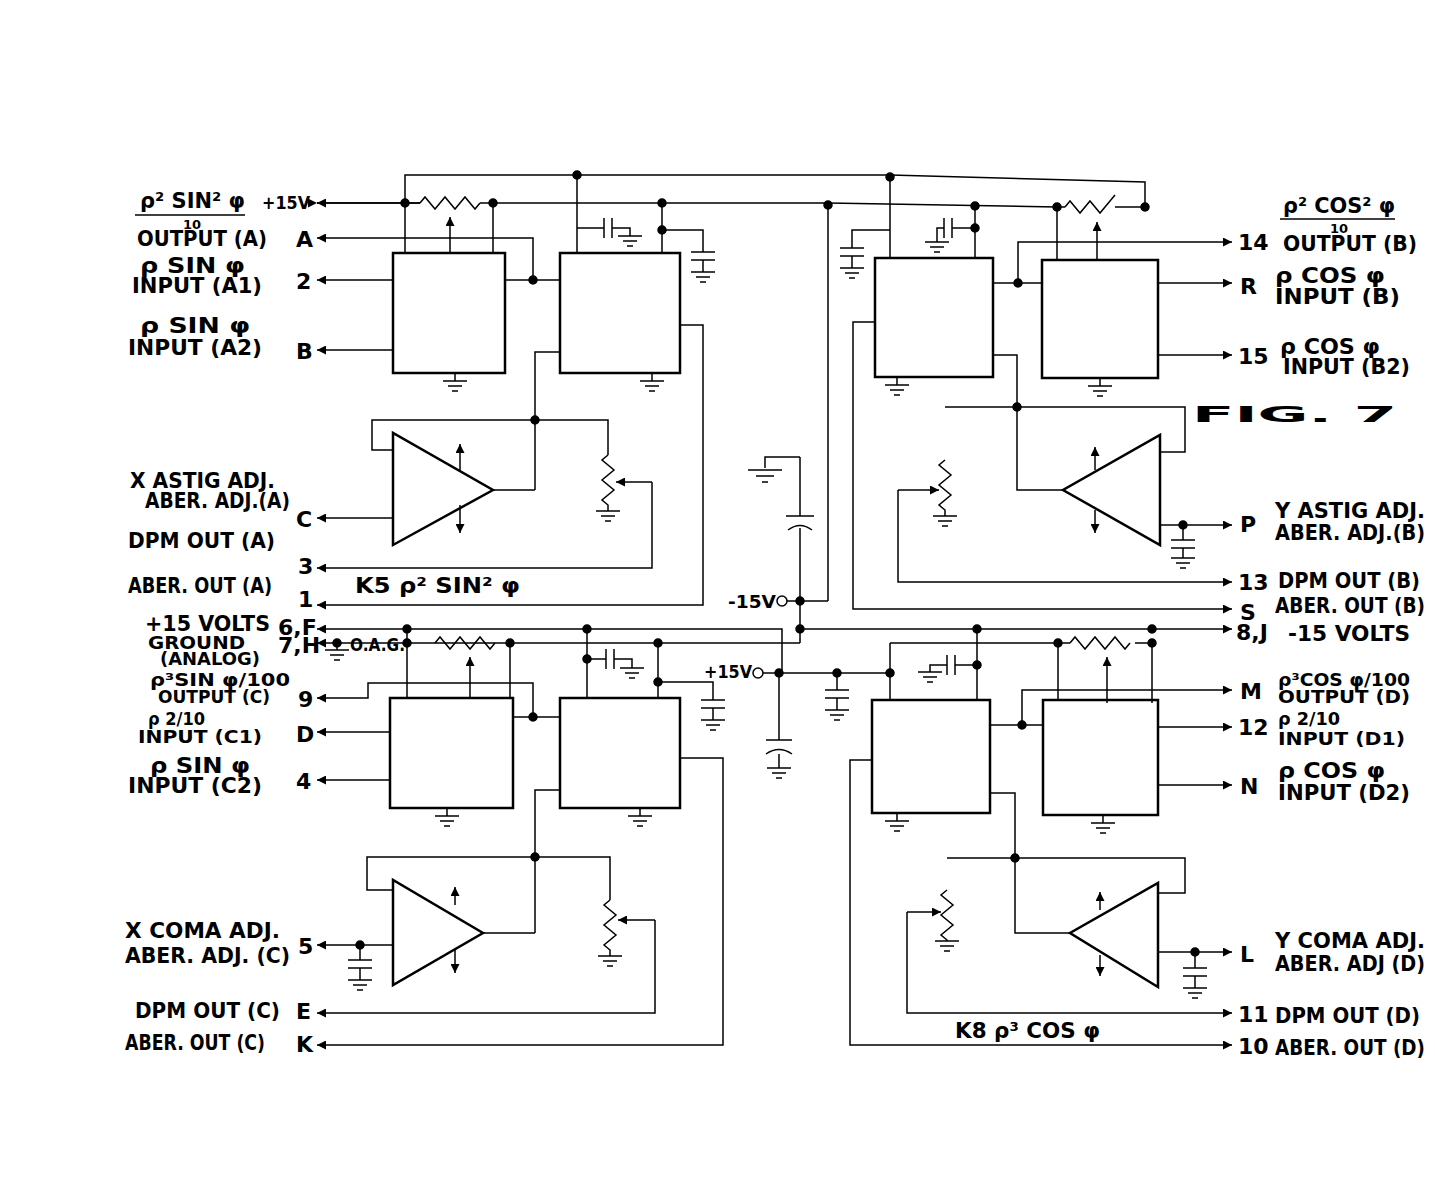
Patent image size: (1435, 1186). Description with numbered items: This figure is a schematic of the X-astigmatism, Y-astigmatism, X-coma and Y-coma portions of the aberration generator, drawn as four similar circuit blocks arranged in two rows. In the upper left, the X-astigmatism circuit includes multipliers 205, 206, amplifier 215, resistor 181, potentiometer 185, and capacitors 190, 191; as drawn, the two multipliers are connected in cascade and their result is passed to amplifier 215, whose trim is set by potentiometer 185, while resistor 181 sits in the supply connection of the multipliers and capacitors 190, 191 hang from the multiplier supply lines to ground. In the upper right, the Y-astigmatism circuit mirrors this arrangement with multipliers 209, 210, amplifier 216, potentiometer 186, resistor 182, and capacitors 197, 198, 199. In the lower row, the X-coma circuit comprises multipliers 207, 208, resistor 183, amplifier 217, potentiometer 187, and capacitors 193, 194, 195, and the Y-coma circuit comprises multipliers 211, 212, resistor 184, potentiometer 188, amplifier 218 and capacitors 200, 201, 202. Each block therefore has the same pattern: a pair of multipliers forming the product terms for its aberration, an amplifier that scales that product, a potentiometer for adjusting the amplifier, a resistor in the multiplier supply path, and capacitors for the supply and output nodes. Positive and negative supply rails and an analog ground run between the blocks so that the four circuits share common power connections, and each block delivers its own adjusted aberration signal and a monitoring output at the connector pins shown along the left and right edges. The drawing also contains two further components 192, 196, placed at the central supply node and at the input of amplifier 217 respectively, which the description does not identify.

The resistor 181 is at (468, 200).
The resistor 182 is at (1122, 207).
The resistor 183 is at (465, 650).
The resistor 184 is at (1130, 650).
The potentiometer 185 is at (616, 472).
The potentiometer 186 is at (950, 492).
The potentiometer 187 is at (625, 913).
The potentiometer 188 is at (955, 925).
The capacitor 190 is at (610, 218).
The capacitor 191 is at (715, 257).
The capacitor 192 is at (793, 520).
The capacitor 193 is at (600, 667).
The capacitor 194 is at (716, 712).
The capacitor 195 is at (792, 757).
The capacitor 196 is at (375, 978).
The capacitor 197 is at (846, 262).
The capacitor 198 is at (948, 222).
The capacitor 199 is at (1210, 520).
The capacitor 200 is at (842, 693).
The capacitor 201 is at (965, 668).
The capacitor 202 is at (1208, 945).
The multiplier 205 is at (438, 376).
The multiplier 206 is at (682, 320).
The multiplier 207 is at (405, 812).
The multiplier 208 is at (650, 812).
The multiplier 209 is at (948, 380).
The multiplier 210 is at (1160, 340).
The multiplier 211 is at (912, 815).
The multiplier 212 is at (1135, 816).
The amplifier 215 is at (480, 505).
The amplifier 216 is at (1075, 500).
The amplifier 217 is at (480, 940).
The amplifier 218 is at (1080, 948).